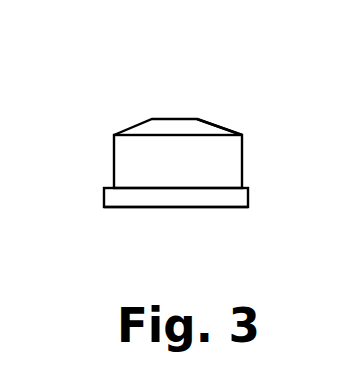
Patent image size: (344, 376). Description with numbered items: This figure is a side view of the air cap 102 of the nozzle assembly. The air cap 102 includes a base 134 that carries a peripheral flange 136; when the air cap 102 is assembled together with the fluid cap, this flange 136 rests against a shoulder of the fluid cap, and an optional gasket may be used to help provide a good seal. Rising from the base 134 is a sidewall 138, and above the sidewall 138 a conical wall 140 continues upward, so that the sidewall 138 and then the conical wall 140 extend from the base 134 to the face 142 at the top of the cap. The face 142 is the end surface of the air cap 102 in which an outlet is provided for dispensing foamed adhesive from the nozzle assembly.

The air cap 102 is at (138, 73).
The base 134 is at (220, 208).
The peripheral flange 136 is at (239, 200).
The sidewall 138 is at (122, 158).
The conical wall 140 is at (220, 125).
The face 142 is at (185, 118).